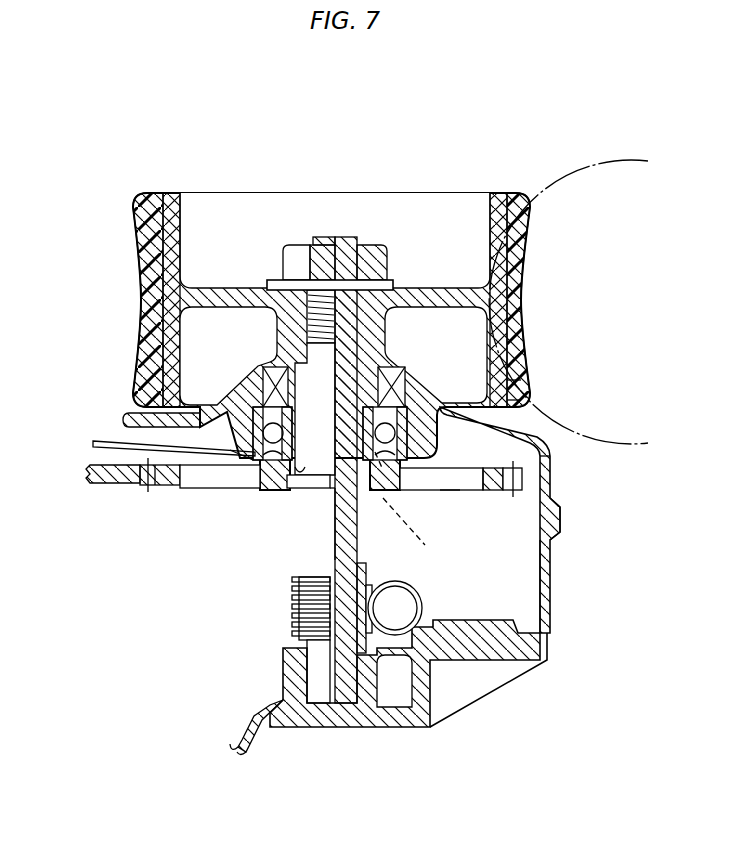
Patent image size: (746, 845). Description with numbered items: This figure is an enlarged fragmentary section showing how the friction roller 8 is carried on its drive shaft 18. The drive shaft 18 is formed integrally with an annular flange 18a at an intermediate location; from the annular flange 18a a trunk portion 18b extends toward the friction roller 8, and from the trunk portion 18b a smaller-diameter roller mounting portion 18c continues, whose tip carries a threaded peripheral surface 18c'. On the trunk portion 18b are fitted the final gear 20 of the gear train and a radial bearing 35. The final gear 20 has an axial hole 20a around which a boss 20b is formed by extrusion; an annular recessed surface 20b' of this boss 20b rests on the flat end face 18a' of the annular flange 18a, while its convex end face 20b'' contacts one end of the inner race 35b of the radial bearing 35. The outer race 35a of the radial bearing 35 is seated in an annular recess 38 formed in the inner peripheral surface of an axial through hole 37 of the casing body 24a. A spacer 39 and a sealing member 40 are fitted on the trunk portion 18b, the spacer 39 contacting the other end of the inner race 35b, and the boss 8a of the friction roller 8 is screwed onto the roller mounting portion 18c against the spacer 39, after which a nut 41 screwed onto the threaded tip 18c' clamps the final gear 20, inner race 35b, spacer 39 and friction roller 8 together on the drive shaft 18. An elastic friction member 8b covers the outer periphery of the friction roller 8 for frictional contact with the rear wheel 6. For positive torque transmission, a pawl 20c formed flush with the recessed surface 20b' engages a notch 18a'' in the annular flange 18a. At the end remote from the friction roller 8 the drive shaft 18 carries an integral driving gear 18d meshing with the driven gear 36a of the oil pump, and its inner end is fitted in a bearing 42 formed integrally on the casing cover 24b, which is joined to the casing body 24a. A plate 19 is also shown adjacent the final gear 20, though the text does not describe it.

The rear wheel 6 is at (594, 178).
The friction roller 8 is at (398, 191).
The boss 8a is at (283, 317).
The elastic friction member 8b is at (513, 203).
The drive shaft 18 is at (370, 549).
The annular flange 18a is at (266, 536).
The flat end face 18a' is at (265, 549).
The notch 18a'' is at (423, 506).
The trunk portion 18b is at (313, 392).
The roller mounting portion 18c is at (423, 355).
The threaded peripheral surface 18c' is at (245, 356).
The driving gear 18d is at (292, 610).
The plate 19 is at (100, 483).
The final gear 20 is at (172, 485).
The axial hole 20a is at (300, 497).
The boss 20b is at (152, 447).
The annular recessed surface 20b' is at (264, 502).
The convex end face 20b'' is at (127, 416).
The pawl 20c is at (395, 478).
The casing body 24a is at (550, 487).
The casing cover 24b is at (550, 550).
The radial bearing 35 is at (425, 433).
The outer race 35a is at (547, 453).
The inner race 35b is at (450, 486).
The driven gear 36a is at (423, 593).
The axial through hole 37 is at (507, 383).
The annular recess 38 is at (507, 400).
The spacer 39 is at (267, 375).
The sealing member 40 is at (362, 372).
The nut 41 is at (290, 253).
The bearing 42 is at (352, 703).